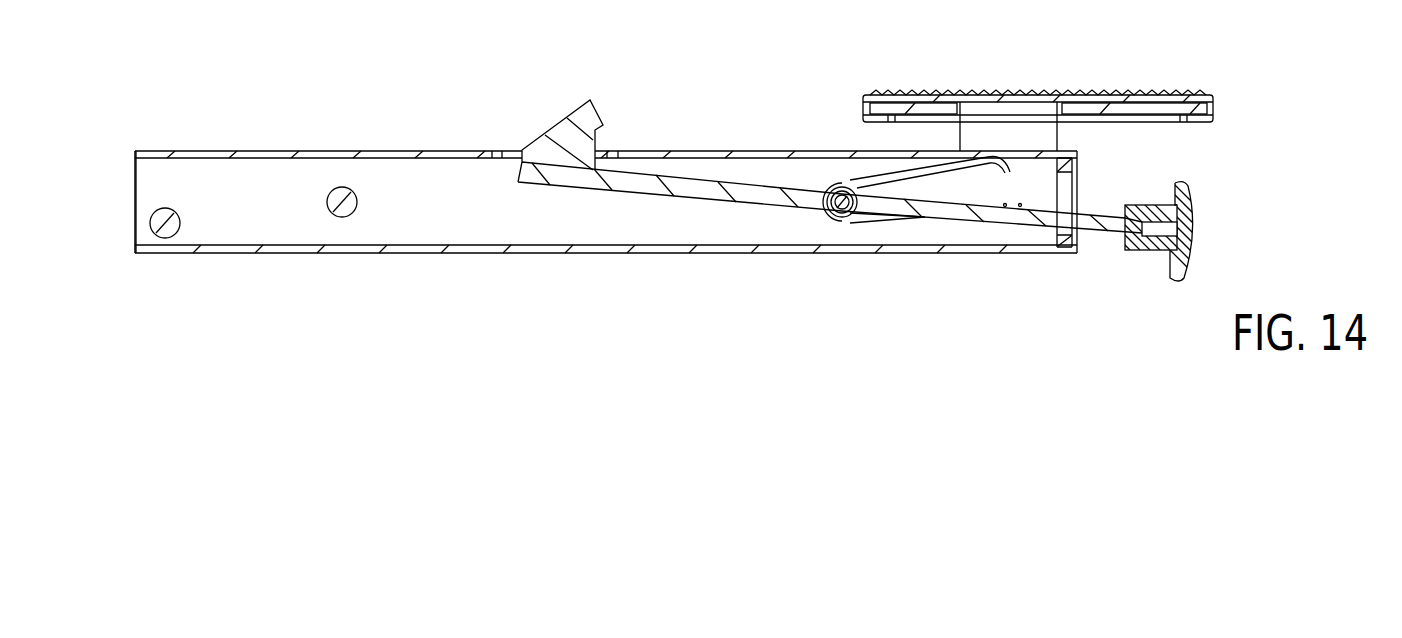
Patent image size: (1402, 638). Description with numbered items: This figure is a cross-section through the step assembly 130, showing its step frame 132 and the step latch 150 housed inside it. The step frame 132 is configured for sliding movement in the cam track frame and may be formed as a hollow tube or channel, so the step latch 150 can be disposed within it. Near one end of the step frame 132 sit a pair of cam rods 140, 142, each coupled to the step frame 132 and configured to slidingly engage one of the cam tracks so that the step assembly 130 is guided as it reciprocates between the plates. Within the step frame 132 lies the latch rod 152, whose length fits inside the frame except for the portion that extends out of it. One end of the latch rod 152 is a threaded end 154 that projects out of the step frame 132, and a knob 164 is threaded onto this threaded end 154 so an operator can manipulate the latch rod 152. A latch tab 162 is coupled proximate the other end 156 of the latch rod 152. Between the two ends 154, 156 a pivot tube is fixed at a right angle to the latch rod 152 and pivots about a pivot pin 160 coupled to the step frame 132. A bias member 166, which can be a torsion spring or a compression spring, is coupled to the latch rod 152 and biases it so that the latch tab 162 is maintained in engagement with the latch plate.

The step assembly 130 is at (235, 130).
The step frame 132 is at (607, 253).
The cam rod 140 is at (150, 223).
The cam rod 142 is at (348, 214).
The step latch 150 is at (703, 172).
The latch rod 152 is at (733, 193).
The threaded end 154 is at (1160, 233).
The other end 156 is at (522, 130).
The pivot pin 160 is at (840, 213).
The latch tab 162 is at (590, 100).
The knob 164 is at (1182, 198).
The bias member 166 is at (887, 175).